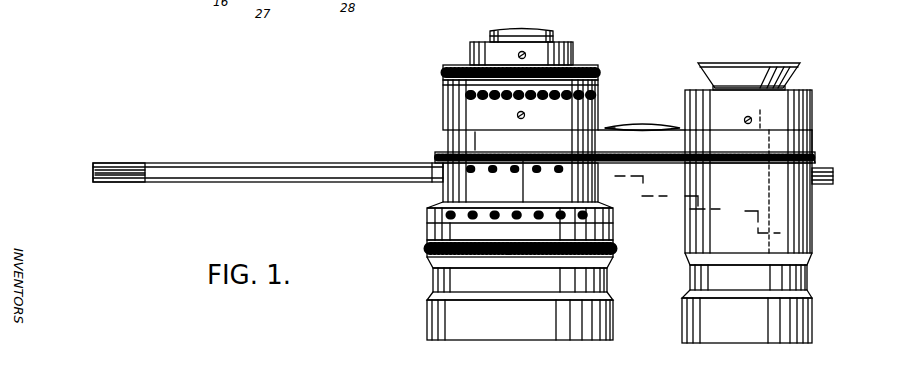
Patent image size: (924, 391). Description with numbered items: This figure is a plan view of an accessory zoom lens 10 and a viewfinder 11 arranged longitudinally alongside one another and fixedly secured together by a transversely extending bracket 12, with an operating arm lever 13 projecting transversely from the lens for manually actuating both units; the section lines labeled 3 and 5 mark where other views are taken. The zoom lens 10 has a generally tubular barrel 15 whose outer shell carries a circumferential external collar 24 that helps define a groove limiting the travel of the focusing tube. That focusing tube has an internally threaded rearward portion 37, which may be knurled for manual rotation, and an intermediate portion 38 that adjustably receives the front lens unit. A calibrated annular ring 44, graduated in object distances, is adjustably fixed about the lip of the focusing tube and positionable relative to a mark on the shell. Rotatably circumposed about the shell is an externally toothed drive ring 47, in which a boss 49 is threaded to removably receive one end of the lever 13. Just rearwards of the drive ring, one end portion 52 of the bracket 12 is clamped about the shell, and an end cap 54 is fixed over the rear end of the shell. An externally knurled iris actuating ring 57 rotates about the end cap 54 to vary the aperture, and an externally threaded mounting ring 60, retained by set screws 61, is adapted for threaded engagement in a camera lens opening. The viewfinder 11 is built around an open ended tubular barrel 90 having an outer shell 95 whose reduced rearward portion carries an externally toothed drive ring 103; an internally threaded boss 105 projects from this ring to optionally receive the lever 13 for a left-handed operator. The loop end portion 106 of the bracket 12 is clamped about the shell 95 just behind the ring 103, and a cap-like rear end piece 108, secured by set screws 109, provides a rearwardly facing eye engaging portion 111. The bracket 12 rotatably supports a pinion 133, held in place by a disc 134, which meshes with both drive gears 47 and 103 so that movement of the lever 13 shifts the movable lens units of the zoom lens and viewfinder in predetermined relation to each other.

The zoom effect accessory lens 10 is at (440, 108).
The viewfinder 11 is at (817, 110).
The bracket 12 is at (614, 128).
The operating arm lever 13 is at (237, 163).
The barrel 15 is at (424, 315).
The external shoulder or collar 24 is at (442, 197).
The rearward portion of focusing tube 37 is at (433, 277).
The intermediate portion of focusing tube 38 is at (432, 293).
The calibrated annular ring or scale 44 is at (426, 247).
The drive ring or gear 47 is at (435, 157).
The boss or lug 49 is at (431, 183).
The end portion of bracket 52 is at (443, 135).
The end cap 54 is at (449, 118).
The iris actuating ring 57 is at (443, 73).
The mounting ring 60 is at (573, 52).
The set screws 61 is at (525, 53).
The viewfinder barrel 90 is at (808, 268).
The outer shell or body of viewfinder barrel 95 is at (812, 317).
The drive ring or gear 103 is at (815, 158).
The internally threaded boss 105 is at (833, 174).
The end portion or loop of bracket 106 is at (812, 140).
The rear end piece 108 is at (811, 92).
The set screws 109 is at (762, 106).
The eye engaging portion 111 is at (777, 68).
The pinion or spur gear 133 is at (653, 158).
The disc or button 134 is at (648, 124).
The section line 3 is at (522, 134).
The section line 5 is at (78, 170).